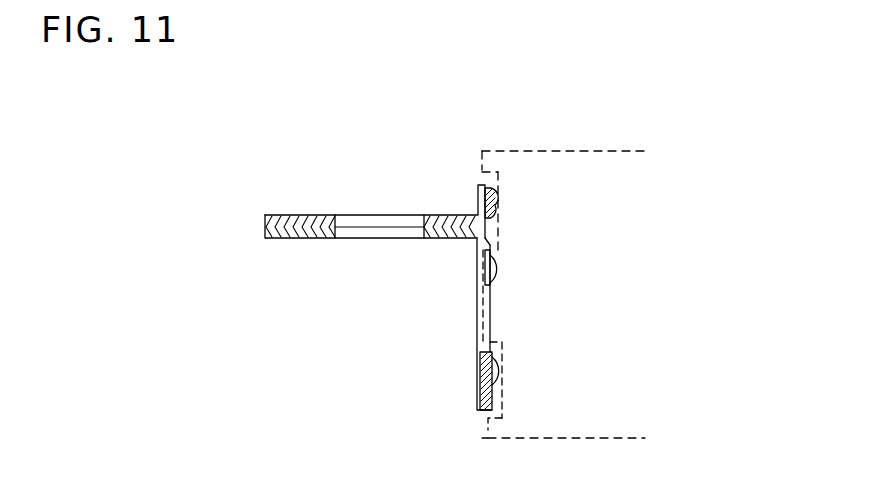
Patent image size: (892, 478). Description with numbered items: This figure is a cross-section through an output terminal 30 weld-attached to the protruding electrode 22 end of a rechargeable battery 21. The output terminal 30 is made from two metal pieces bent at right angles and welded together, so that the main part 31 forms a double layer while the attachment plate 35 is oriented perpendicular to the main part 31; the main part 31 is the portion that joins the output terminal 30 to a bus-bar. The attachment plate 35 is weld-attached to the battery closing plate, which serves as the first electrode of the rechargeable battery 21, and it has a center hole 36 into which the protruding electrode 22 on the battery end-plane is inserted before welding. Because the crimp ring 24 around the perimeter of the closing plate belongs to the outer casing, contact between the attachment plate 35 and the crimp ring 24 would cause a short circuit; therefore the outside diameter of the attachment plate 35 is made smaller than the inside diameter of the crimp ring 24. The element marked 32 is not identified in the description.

The rechargeable battery 21 is at (597, 150).
The protruding electrode 22 is at (479, 288).
The crimp ring 24 is at (480, 171).
The output terminal 30 is at (344, 280).
The main part 31 is at (300, 242).
The horizontal plate portion 32 is at (365, 215).
The attachment plate 35 is at (480, 385).
The center hole 36 is at (479, 342).